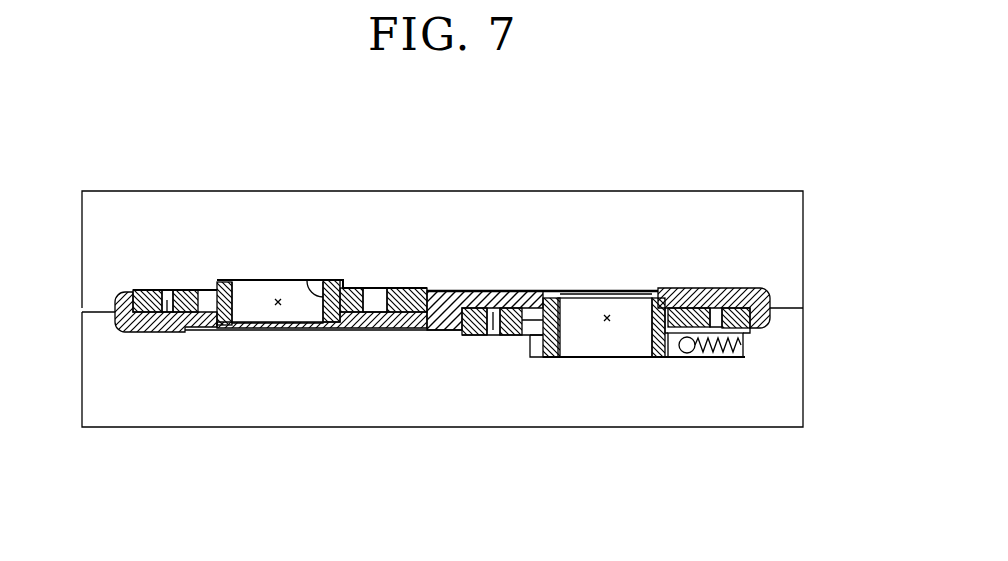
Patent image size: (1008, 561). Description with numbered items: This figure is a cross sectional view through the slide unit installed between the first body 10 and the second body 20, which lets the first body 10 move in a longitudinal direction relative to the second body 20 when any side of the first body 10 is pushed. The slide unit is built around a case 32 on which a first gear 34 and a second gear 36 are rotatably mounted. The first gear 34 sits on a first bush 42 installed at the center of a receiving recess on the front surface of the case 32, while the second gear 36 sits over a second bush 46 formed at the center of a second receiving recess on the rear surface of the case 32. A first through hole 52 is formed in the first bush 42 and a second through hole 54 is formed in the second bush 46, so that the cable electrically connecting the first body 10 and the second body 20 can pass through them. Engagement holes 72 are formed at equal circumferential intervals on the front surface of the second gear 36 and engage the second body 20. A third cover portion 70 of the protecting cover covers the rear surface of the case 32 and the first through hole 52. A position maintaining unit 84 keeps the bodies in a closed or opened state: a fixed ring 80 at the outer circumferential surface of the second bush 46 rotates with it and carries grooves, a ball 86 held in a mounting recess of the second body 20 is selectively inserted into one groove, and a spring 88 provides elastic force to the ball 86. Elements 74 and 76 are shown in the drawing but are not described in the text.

The first body 10 is at (787, 222).
The second body 20 is at (787, 400).
The case 32 is at (445, 331).
The first gear 34 is at (370, 288).
The second gear 36 is at (481, 337).
The first bush 42 is at (307, 281).
The second bush 46 is at (665, 310).
The first through hole 52 is at (278, 298).
The second through hole 54 is at (607, 321).
The third cover portion 70 is at (167, 292).
The engagement holes 72 is at (512, 291).
The pin 74 is at (493, 337).
The parting line 76 is at (118, 303).
The fixed ring 80 is at (538, 352).
The position maintaining unit 84 is at (705, 356).
The ball 86 is at (683, 351).
The spring 88 is at (735, 357).